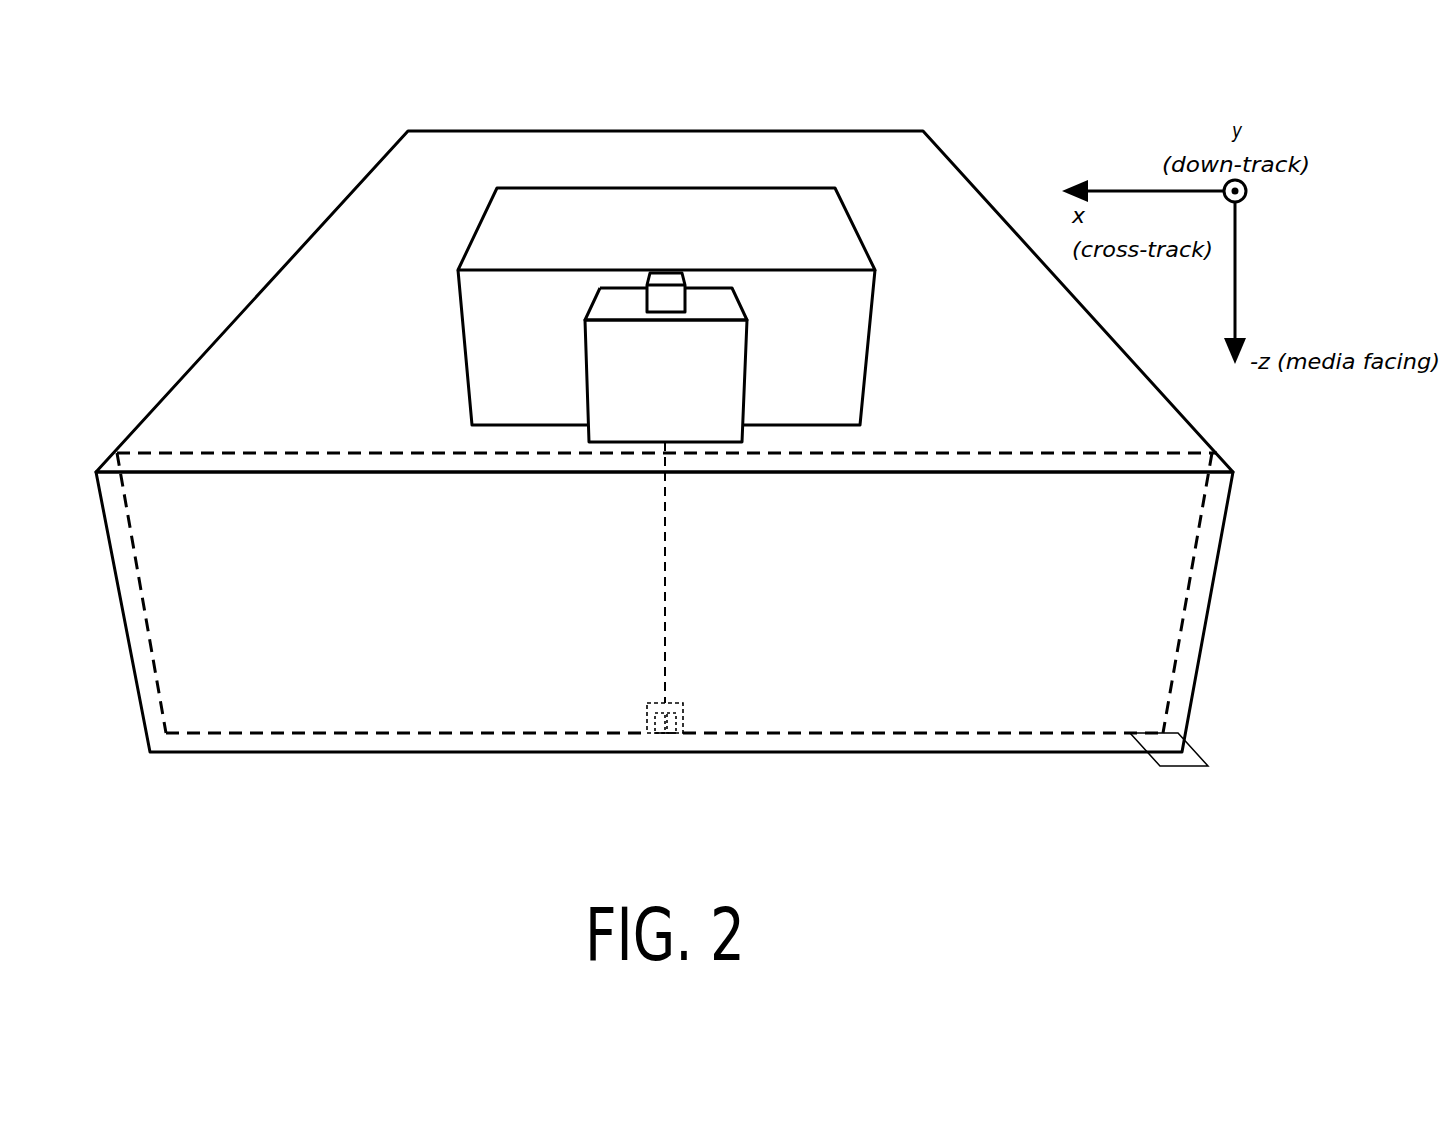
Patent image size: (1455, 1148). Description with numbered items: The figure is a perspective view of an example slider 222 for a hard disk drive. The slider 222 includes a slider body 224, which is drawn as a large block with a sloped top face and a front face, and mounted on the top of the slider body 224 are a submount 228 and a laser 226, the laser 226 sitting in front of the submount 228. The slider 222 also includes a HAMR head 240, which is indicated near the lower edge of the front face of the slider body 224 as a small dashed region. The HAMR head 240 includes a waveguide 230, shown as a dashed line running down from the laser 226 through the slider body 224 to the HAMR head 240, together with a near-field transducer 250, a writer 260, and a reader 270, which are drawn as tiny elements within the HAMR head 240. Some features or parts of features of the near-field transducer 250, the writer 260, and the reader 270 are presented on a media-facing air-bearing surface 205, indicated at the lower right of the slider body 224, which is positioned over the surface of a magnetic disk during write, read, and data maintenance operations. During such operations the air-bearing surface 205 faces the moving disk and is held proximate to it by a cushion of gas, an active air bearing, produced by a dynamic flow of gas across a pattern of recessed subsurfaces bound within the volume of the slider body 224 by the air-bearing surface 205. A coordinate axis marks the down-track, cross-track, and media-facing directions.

The slider 222 is at (664, 395).
The slider body 224 is at (918, 188).
The laser 226 is at (727, 388).
The submount 228 is at (480, 348).
The waveguide 230 is at (665, 618).
The HAMR head 240 is at (690, 688).
The near-field transducer 250 is at (668, 730).
The writer 260 is at (677, 717).
The reader 270 is at (657, 708).
The media-facing air-bearing surface 205 is at (1188, 760).